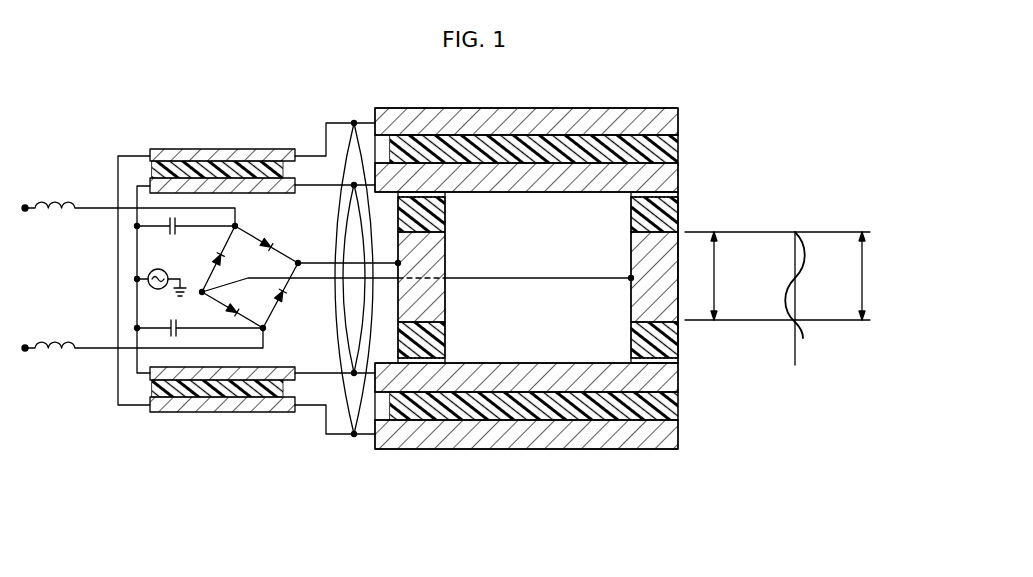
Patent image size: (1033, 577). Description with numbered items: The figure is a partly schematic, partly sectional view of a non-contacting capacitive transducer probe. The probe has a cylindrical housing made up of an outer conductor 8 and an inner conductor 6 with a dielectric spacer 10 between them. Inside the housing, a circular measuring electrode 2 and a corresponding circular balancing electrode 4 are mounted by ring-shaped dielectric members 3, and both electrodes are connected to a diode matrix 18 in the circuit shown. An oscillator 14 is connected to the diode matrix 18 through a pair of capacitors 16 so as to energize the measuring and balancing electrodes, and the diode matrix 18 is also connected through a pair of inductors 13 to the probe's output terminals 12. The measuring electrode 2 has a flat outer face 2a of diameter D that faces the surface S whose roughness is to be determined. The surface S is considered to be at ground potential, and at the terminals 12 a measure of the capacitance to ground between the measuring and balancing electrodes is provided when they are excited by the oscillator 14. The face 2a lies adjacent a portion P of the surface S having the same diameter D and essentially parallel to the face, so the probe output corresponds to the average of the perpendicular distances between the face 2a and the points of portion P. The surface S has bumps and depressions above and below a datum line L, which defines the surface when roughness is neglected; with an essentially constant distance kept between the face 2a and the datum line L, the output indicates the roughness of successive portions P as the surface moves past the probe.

The measuring electrode 2 is at (642, 261).
The flat outer face 2a is at (678, 252).
The ring-shaped dielectric members 3 is at (433, 343).
The balancing electrode 4 is at (427, 252).
The inner conductor 6 is at (177, 157).
The outer conductor 8 is at (273, 185).
The dielectric spacer 10 is at (218, 162).
The output terminals 12 is at (24, 205).
The inductors 13 is at (60, 203).
The oscillator 14 is at (150, 291).
The capacitors 16 is at (177, 229).
The diode matrix 18 is at (279, 315).
The diameter D is at (777, 276).
The portion of the surface P is at (869, 276).
The surface S is at (785, 298).
The datum line L is at (797, 355).